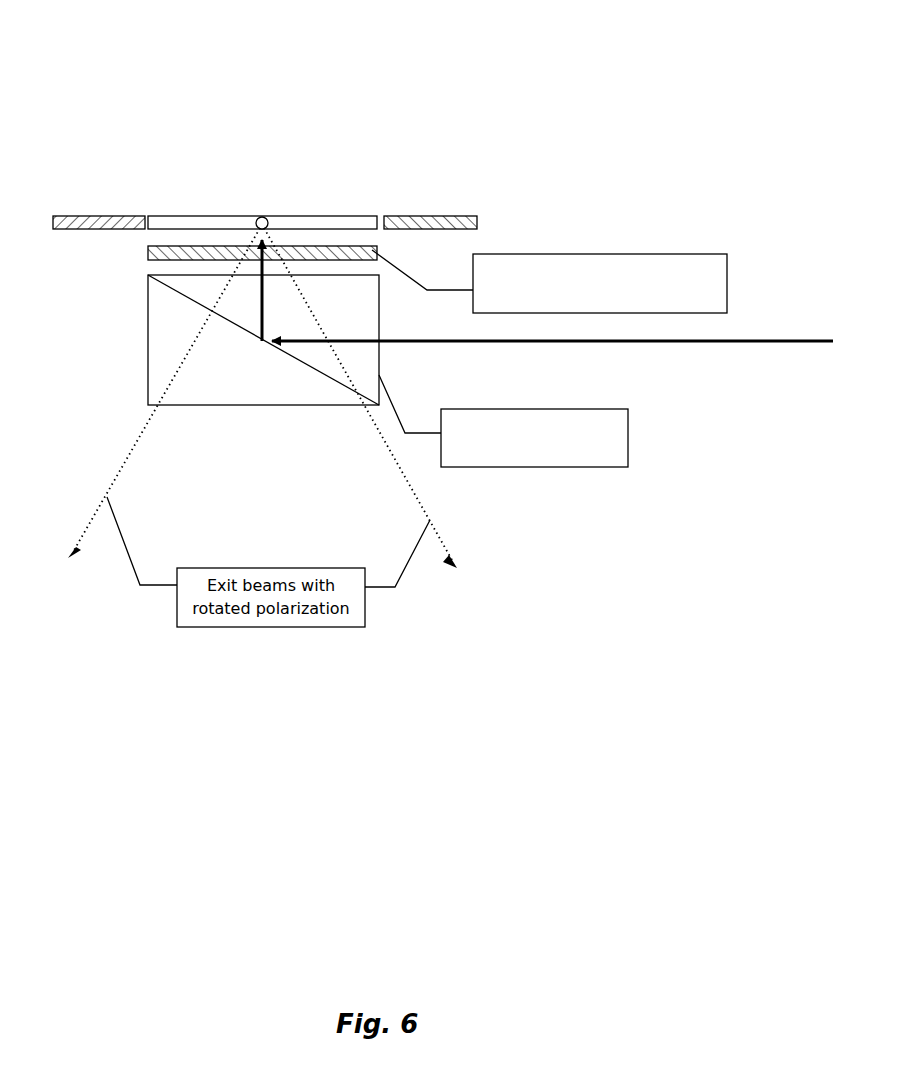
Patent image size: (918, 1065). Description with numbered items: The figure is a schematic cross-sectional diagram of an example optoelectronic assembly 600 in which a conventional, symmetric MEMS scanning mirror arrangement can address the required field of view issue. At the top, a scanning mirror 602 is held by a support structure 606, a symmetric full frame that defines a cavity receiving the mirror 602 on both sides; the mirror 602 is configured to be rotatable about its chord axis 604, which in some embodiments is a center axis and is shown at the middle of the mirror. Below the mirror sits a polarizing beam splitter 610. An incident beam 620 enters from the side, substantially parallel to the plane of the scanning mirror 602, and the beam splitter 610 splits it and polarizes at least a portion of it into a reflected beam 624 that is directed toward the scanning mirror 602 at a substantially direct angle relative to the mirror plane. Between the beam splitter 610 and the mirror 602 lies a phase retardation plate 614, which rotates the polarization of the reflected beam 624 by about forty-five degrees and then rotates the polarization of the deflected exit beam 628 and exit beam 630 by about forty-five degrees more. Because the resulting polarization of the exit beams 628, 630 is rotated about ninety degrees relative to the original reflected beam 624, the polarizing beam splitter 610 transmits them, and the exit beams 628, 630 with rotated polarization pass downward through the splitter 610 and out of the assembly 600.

The optoelectronic assembly 600 is at (637, 68).
The scanning mirror 602 is at (340, 207).
The chord axis 604 is at (263, 216).
The support structure 606 is at (98, 213).
The polarizing beam splitter 610 is at (379, 370).
The phase retardation plate 614 is at (147, 257).
The incident beam 620 is at (695, 345).
The reflected beam 624 is at (262, 320).
The exit beam 628 is at (445, 547).
The exit beam 630 is at (113, 482).